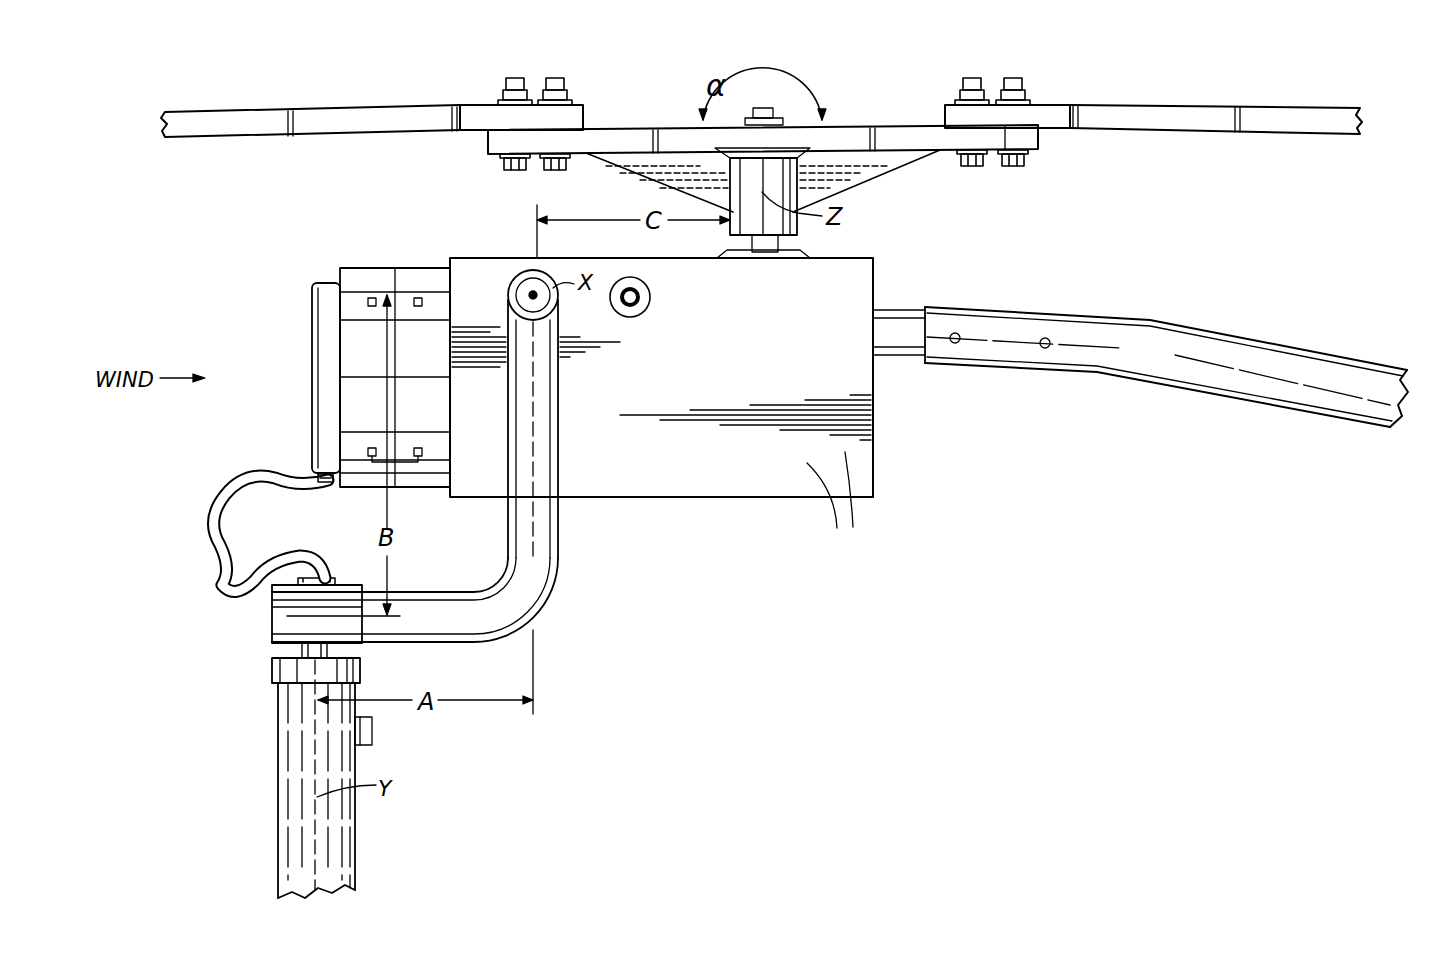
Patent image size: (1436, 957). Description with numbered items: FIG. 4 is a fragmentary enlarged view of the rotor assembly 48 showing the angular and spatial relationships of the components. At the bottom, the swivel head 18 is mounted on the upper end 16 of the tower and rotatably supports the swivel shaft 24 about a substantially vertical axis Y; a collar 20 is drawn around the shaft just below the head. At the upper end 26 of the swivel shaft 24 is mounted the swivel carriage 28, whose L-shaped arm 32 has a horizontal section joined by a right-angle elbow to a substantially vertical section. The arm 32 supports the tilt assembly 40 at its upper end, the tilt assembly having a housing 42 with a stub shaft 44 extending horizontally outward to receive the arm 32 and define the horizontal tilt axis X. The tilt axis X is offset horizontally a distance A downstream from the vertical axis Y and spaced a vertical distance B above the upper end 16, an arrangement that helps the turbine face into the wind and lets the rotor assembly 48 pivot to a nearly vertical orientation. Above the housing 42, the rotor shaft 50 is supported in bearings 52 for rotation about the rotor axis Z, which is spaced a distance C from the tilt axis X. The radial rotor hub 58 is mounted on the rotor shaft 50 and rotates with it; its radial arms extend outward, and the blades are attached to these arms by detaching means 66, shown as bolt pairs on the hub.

The upper end 16 is at (300, 788).
The swivel head 18 is at (273, 623).
The collar 20 is at (290, 671).
The swivel shaft 24 is at (357, 666).
The upper end 26 is at (327, 584).
The swivel carriage 28 is at (446, 646).
The arm 32 is at (559, 558).
The tilt assembly 40 is at (698, 498).
The housing 42 is at (830, 510).
The stub shaft 44 is at (520, 274).
The rotor assembly 48 is at (900, 176).
The rotor shaft 50 is at (772, 255).
The bearing 52 is at (745, 258).
The radial rotor hub 58 is at (632, 160).
The detaching means 66 is at (555, 78).